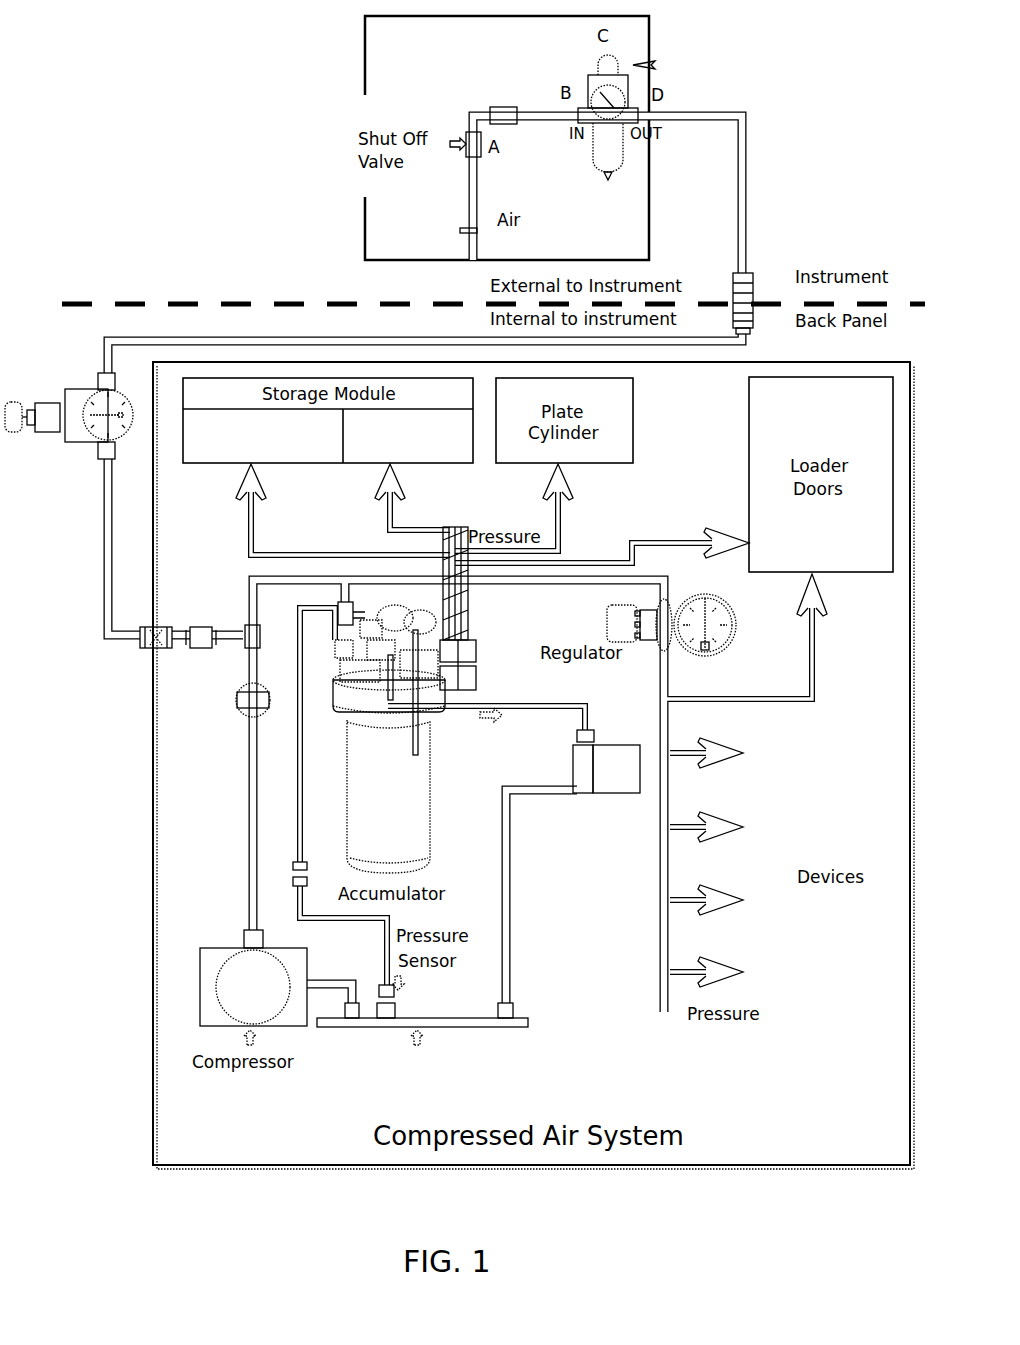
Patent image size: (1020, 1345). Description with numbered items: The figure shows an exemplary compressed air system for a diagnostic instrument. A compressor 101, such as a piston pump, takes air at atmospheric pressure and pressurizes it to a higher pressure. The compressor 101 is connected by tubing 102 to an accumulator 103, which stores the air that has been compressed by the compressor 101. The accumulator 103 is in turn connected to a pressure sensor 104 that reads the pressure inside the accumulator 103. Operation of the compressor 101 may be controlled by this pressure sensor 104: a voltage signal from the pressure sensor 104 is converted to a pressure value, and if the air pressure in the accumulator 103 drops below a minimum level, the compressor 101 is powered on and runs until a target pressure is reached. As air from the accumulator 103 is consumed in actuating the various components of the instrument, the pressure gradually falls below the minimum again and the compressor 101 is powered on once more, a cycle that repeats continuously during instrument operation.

The compressor 101 is at (200, 992).
The tubing 102 is at (248, 590).
The accumulator 103 is at (415, 828).
The pressure sensor 104 is at (393, 1013).